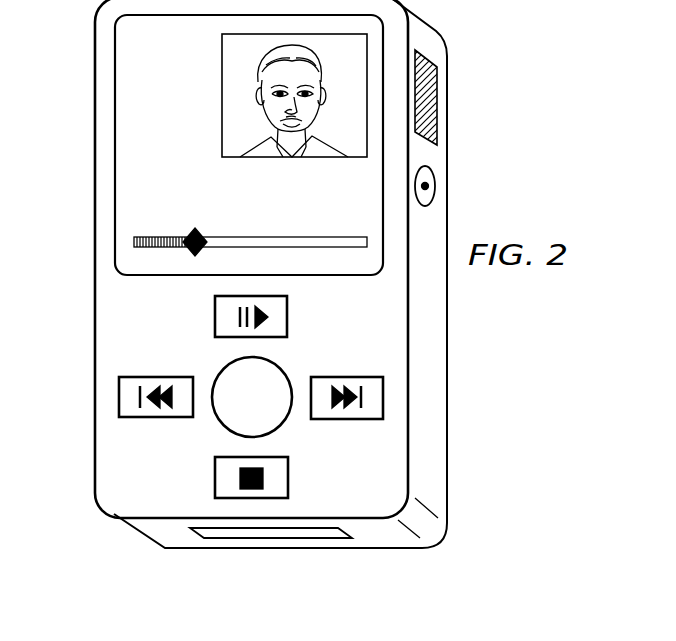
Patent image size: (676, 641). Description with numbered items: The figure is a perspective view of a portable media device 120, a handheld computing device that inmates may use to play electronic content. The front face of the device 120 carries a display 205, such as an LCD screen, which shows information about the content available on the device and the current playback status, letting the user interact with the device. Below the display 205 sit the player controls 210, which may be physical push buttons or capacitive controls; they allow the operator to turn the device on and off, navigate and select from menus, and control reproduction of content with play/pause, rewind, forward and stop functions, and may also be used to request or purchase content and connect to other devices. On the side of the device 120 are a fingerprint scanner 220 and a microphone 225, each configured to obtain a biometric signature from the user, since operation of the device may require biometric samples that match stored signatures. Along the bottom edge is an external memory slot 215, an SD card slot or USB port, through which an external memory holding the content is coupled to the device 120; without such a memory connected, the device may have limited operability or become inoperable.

The portable media device 120 is at (538, 130).
The display 205 is at (135, 156).
The player controls 210 is at (132, 397).
The external memory slot 215 is at (275, 529).
The fingerprint scanner 220 is at (432, 100).
The microphone 225 is at (436, 186).